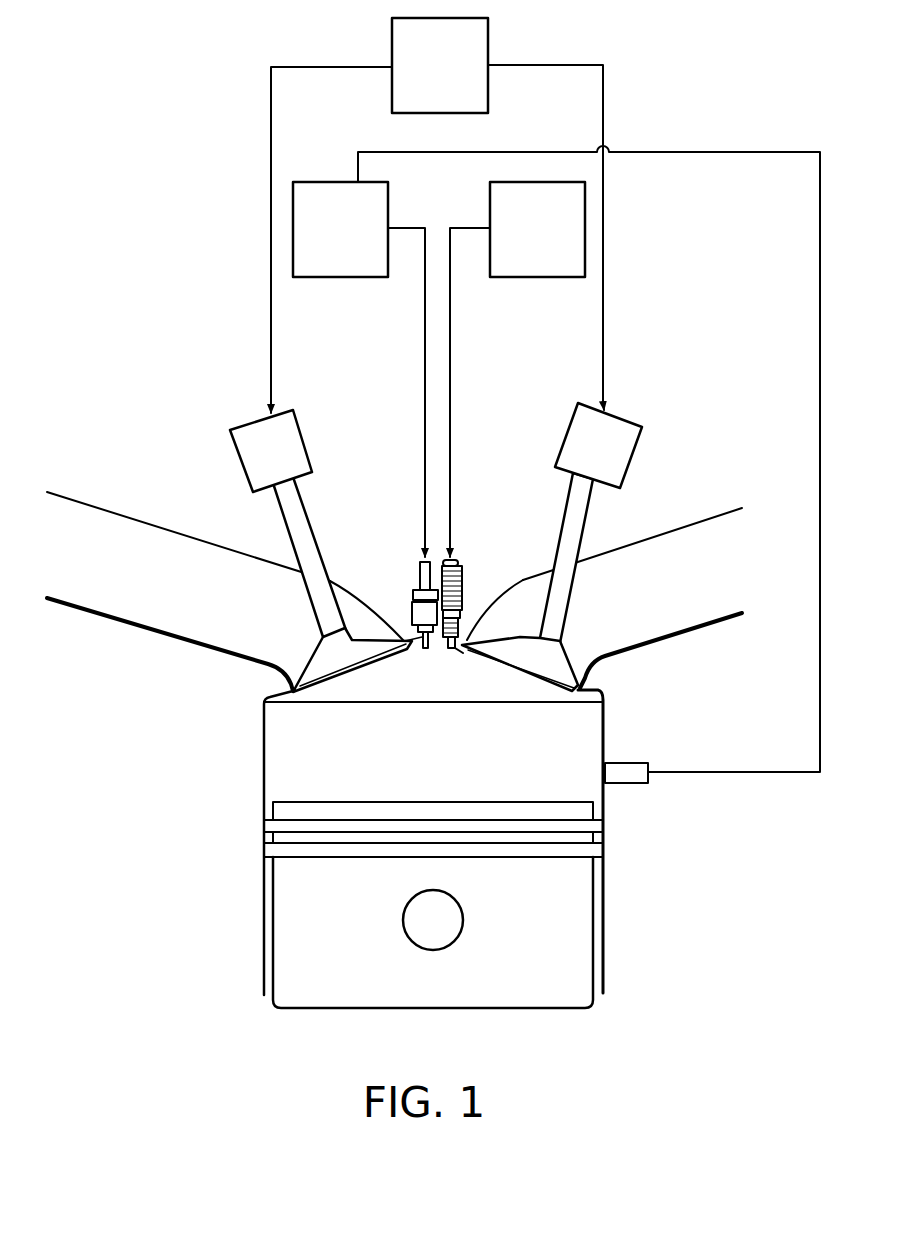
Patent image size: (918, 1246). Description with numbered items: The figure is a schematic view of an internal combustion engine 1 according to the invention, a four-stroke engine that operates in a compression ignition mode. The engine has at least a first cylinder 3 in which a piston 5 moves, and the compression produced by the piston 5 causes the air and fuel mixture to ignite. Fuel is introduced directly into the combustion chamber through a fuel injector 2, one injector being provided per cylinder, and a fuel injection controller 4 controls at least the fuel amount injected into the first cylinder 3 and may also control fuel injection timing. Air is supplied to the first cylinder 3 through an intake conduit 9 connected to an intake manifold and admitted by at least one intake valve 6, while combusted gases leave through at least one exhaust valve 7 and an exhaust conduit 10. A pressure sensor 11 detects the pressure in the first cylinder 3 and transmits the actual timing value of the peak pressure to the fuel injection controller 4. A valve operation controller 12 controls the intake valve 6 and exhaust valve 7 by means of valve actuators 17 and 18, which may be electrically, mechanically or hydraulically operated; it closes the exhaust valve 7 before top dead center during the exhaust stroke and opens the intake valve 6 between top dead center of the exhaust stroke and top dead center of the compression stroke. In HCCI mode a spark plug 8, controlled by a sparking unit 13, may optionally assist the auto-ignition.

The internal combustion engine cylinder 1 is at (263, 767).
The fuel injector 2 is at (417, 567).
The first cylinder 3 is at (443, 768).
The fuel injection controller 4 is at (330, 247).
The piston 5 is at (593, 882).
The intake valve 6 is at (313, 527).
The exhaust valve 7 is at (558, 527).
The spark plug 8 is at (453, 553).
The intake conduit 9 is at (57, 603).
The exhaust conduit 10 is at (705, 633).
The pressure sensor 11 is at (628, 787).
The valve operation controller 12 is at (423, 82).
The sparking unit 13 is at (520, 247).
The valve actuator 17 is at (250, 462).
The valve actuator 18 is at (622, 458).